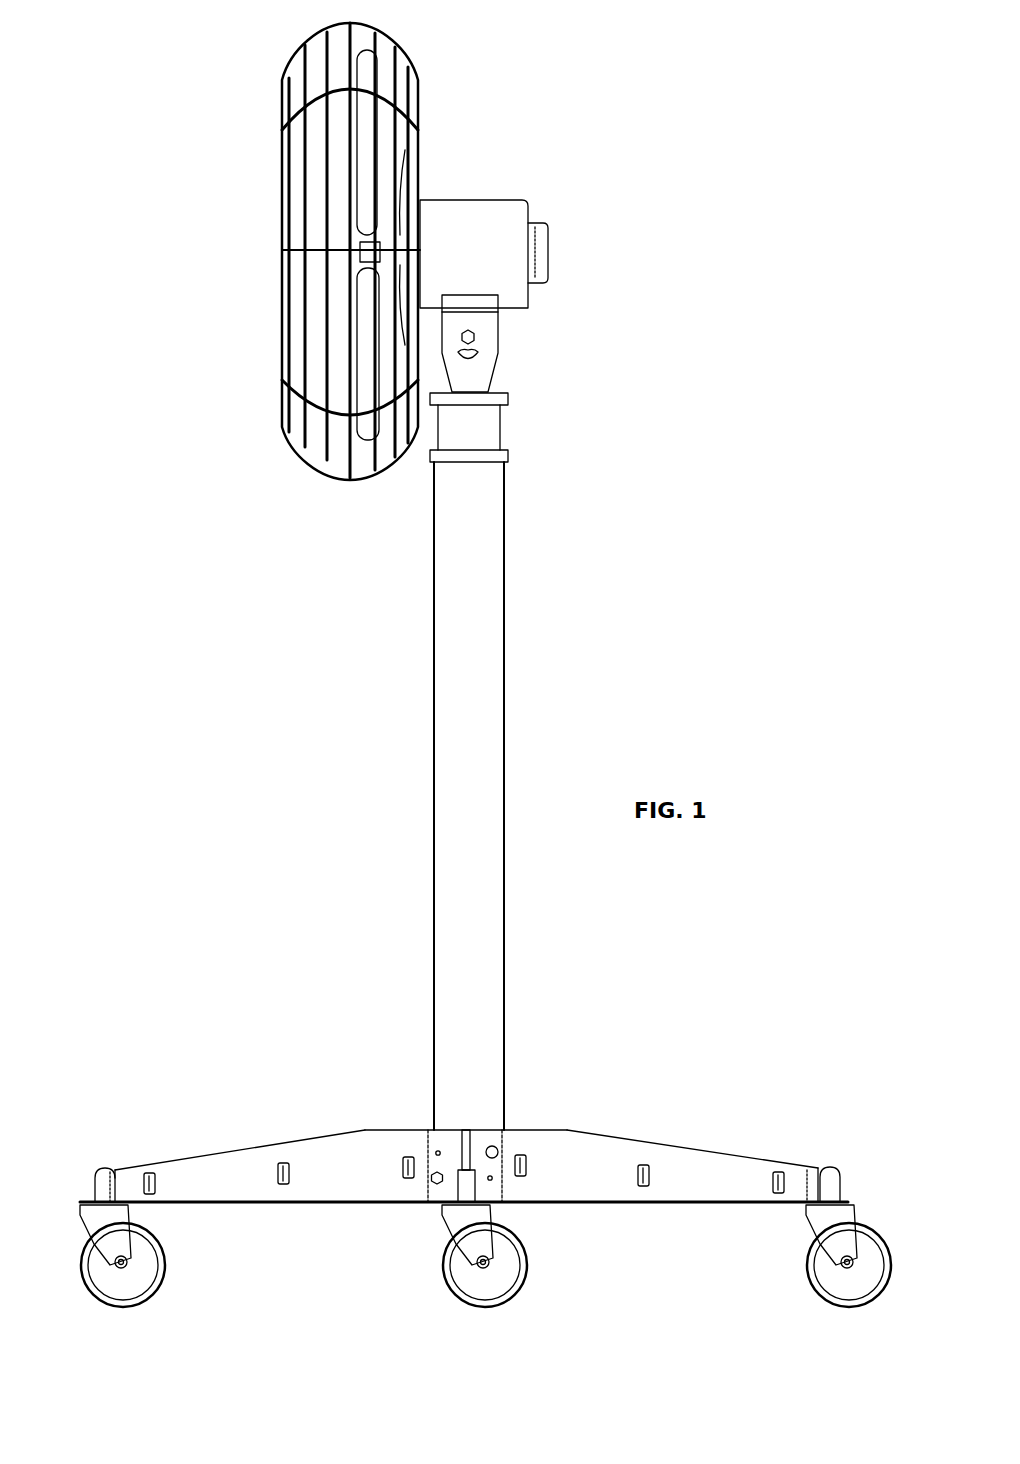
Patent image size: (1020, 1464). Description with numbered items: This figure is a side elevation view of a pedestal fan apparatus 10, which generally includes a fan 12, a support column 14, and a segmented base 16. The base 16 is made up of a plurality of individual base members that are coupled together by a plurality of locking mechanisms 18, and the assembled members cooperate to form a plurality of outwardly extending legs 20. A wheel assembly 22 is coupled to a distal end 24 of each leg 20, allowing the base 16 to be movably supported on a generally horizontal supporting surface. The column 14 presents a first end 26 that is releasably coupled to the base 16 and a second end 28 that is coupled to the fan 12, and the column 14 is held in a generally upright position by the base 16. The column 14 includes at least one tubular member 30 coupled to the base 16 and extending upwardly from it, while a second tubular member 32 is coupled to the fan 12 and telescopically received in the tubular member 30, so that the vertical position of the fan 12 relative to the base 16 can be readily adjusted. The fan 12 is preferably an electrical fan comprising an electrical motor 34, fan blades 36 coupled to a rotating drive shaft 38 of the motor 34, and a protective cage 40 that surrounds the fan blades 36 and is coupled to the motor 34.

The pedestal fan apparatus 10 is at (676, 79).
The fan 12 is at (488, 193).
The support column 14 is at (517, 694).
The segmented base 16 is at (623, 1126).
The locking mechanism 18 is at (279, 1183).
The leg 20 is at (262, 1148).
The wheel assembly 22 is at (80, 1212).
The distal end 24 is at (113, 1170).
The first end 26 is at (502, 1120).
The second end 28 is at (500, 413).
The tubular member 30 is at (503, 642).
The second tubular member 32 is at (500, 433).
The electrical motor 34 is at (528, 200).
The fan blades 36 is at (360, 427).
The rotating drive shaft 38 is at (420, 140).
The protective cage 40 is at (283, 413).